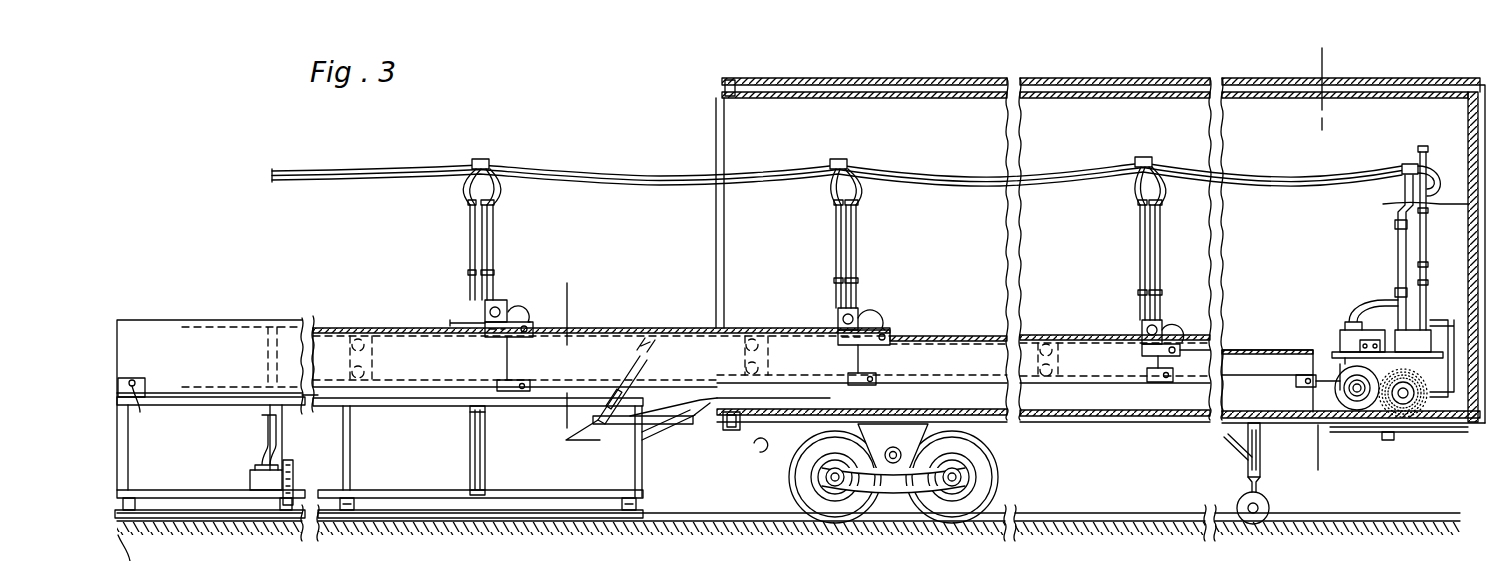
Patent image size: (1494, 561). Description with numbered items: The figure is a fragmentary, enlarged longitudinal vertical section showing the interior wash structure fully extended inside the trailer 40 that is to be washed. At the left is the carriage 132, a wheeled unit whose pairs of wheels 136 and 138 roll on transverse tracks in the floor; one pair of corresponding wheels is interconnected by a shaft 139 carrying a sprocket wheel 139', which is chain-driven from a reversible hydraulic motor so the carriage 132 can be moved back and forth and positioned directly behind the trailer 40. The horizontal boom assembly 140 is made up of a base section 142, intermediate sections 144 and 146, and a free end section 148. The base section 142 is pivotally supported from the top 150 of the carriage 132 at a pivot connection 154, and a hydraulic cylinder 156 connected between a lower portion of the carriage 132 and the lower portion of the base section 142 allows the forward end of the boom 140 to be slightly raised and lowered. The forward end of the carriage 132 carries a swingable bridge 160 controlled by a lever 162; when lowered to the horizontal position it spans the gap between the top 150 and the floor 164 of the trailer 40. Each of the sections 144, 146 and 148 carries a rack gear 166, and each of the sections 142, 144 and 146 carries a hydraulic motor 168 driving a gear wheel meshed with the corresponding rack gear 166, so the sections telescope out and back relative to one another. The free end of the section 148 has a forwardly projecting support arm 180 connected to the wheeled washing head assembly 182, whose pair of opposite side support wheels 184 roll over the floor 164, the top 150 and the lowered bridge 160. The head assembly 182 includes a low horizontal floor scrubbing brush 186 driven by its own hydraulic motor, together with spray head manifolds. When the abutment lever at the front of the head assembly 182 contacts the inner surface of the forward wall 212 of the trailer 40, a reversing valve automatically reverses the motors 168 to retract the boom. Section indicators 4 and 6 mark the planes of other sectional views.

The trailer 40 is at (1094, 78).
The carriage 132 is at (648, 474).
The wheels 136 is at (347, 510).
The wheels 138 is at (628, 510).
The shaft 139 is at (210, 477).
The sprocket wheel 139' is at (313, 476).
The horizontal boom assembly 140 is at (246, 318).
The base section 142 is at (190, 335).
The intermediate section 144 is at (262, 480).
The intermediate section 146 is at (950, 352).
The free end section 148 is at (1238, 352).
The top 150 is at (432, 408).
The pivot connection 154 is at (132, 390).
The hydraulic cylinder 156 is at (472, 455).
The swingable bridge 160 is at (760, 404).
The lever 162 is at (622, 388).
The floor 164 is at (1072, 422).
The rack gear 166 is at (604, 330).
The hydraulic motor 168 is at (492, 312).
The support arm 180 is at (1330, 388).
The washing head assembly 182 is at (1370, 312).
The support wheels 184 is at (1357, 410).
The floor scrubbing brush 186 is at (1425, 405).
The forward wall 212 is at (1390, 204).
The section line 4 is at (566, 294).
The section line 6 is at (1345, 58).